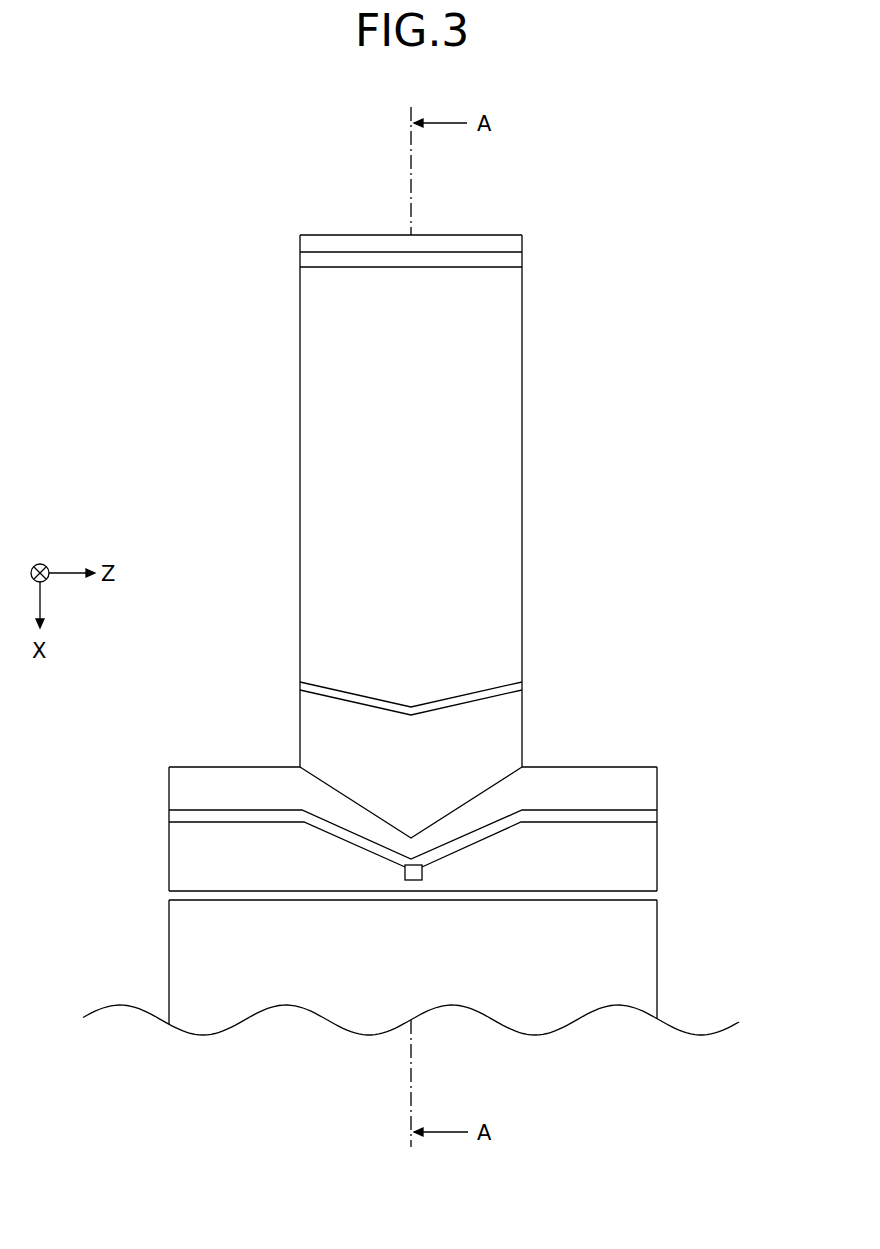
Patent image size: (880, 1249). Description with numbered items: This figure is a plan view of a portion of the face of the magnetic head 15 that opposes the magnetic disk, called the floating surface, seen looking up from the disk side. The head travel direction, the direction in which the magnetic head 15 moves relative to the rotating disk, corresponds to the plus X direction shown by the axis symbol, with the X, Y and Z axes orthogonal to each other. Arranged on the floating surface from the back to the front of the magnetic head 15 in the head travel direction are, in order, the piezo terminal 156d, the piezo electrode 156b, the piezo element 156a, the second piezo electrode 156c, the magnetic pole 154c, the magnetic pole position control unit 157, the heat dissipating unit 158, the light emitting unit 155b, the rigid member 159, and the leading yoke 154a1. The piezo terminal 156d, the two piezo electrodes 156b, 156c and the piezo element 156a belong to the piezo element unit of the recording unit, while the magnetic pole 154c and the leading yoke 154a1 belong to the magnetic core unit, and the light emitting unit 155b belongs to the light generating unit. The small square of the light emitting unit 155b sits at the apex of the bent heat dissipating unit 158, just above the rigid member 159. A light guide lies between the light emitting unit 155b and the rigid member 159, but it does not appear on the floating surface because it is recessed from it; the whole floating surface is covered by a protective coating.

The magnetic head 15 is at (696, 242).
The leading yoke 154a1 is at (659, 955).
The magnetic pole 154c is at (524, 728).
The light emitting unit 155b is at (423, 873).
The piezo element 156a is at (524, 468).
The piezo electrode 156b is at (524, 258).
The piezo electrode 156c is at (524, 683).
The piezo terminal 156d is at (524, 240).
The magnetic pole position control unit 157 is at (659, 787).
The heat dissipating unit 158 is at (659, 815).
The rigid member 159 is at (659, 893).